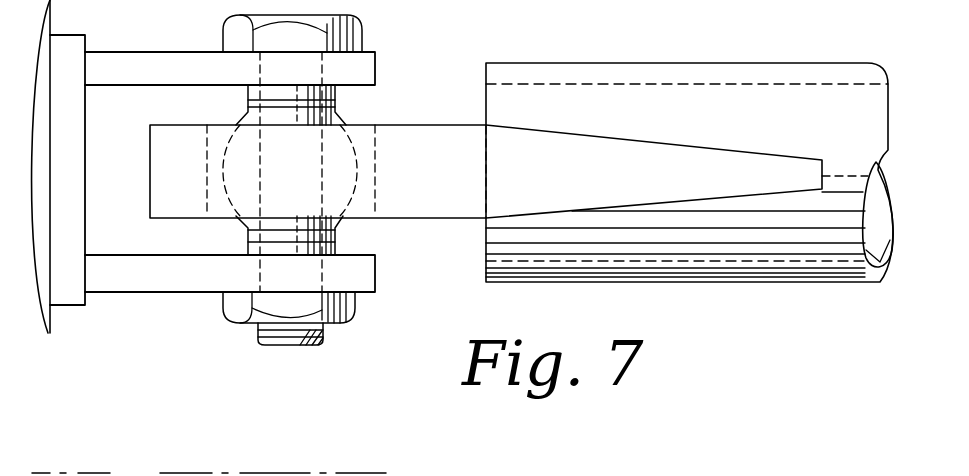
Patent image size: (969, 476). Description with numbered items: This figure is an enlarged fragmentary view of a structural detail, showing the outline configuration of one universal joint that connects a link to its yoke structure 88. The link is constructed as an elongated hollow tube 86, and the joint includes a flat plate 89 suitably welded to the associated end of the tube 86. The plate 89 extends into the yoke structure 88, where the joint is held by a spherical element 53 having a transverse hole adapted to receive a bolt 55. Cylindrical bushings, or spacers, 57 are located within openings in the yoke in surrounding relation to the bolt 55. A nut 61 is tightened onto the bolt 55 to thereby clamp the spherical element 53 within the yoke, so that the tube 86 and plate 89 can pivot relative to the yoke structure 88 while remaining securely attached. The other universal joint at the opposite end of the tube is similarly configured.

The yoke structure 88 is at (132, 58).
The bolt 55 is at (340, 30).
The cylindrical bushing 57 is at (248, 91).
The spherical element 53 is at (350, 168).
The nut 61 is at (230, 307).
The flat plate 89 is at (437, 210).
The hollow tube 86 is at (722, 260).